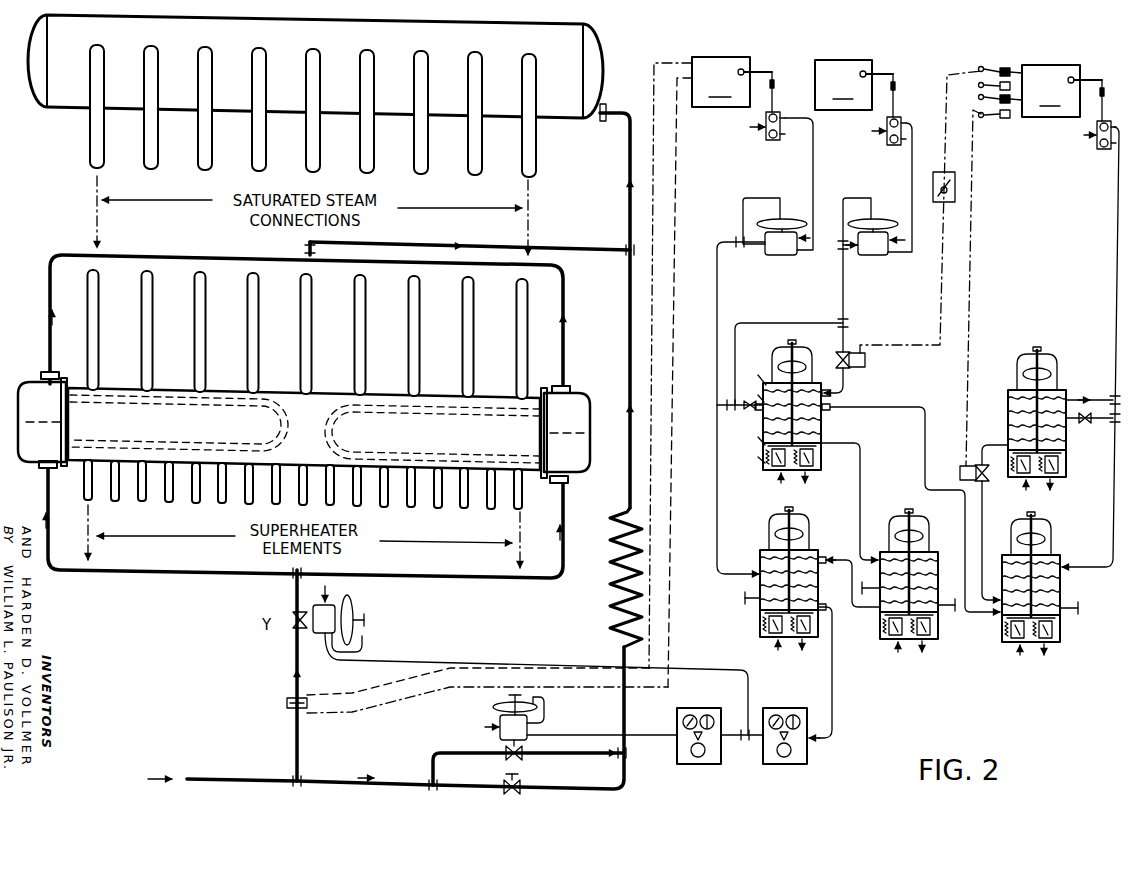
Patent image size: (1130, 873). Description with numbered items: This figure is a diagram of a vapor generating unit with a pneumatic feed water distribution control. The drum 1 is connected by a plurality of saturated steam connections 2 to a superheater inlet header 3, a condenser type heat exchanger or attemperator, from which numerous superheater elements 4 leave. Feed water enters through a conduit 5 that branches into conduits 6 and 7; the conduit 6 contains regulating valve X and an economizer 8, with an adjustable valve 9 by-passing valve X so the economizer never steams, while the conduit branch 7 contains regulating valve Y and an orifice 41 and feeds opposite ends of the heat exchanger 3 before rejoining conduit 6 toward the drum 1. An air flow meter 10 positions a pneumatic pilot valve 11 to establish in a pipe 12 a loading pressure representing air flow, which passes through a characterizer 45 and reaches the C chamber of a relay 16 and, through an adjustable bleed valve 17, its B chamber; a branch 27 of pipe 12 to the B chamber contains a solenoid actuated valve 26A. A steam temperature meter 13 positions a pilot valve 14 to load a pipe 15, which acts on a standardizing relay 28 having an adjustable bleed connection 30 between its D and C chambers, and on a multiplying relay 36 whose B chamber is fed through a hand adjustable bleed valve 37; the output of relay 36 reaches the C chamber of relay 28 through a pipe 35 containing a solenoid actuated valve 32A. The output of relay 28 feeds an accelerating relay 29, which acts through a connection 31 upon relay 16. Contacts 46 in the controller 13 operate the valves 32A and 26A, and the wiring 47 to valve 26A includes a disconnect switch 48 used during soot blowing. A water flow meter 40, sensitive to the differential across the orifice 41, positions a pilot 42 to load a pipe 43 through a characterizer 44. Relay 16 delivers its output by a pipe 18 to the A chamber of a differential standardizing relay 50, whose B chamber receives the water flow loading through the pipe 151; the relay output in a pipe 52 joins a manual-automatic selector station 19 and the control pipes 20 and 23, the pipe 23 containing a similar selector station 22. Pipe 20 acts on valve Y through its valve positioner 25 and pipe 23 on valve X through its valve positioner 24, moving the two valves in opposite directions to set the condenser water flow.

The drum 1 is at (605, 64).
The saturated steam connections 2 is at (463, 337).
The superheater inlet header 3 is at (490, 388).
The superheater elements 4 is at (462, 498).
The conduit 5 is at (228, 778).
The conduit 6 is at (622, 688).
The conduit branch 7 is at (305, 740).
The economizer 8 is at (640, 584).
The adjustable valve 9 is at (522, 783).
The air flow meter 10 is at (854, 71).
The pneumatic pilot valve 11 is at (887, 143).
The pipe 12 is at (912, 180).
The steam temperature meter 13 is at (1057, 77).
The pilot valve 14 is at (1098, 150).
The pipe 15 is at (1114, 250).
The relay 16 is at (782, 350).
The adjustable bleed valve 17 is at (746, 414).
The pipe 18 is at (860, 496).
The manual-automatic selector station 19 is at (785, 768).
The pipe 20 is at (467, 660).
The selector station 22 is at (695, 766).
The pipe 23 is at (657, 738).
The valve positioner 24 is at (498, 732).
The valve positioner 25 is at (338, 635).
The solenoid actuated valve 26A is at (850, 372).
The branch 27 is at (847, 342).
The standardizing relay 28 is at (1055, 530).
The accelerating relay 29 is at (905, 522).
The adjustable bleed connection 30 is at (1076, 608).
The control line 31 is at (925, 426).
The solenoid actuated valve 32A is at (990, 483).
The pipe 35 is at (990, 446).
The multiplying relay 36 is at (1050, 360).
The hand adjustable bleed valve 37 is at (1087, 426).
The water flow meter 40 is at (725, 67).
The orifice 41 is at (286, 704).
The pilot 42 is at (767, 138).
The pipe 43 is at (813, 178).
The characterizer 44 is at (770, 258).
The characterizer 45 is at (873, 258).
The contacts 46 is at (1013, 144).
The wiring 47 is at (935, 296).
The disconnect switch 48 is at (943, 172).
The differential standardizing relay 50 is at (776, 516).
The pipe 52 is at (835, 703).
The control line 151 is at (716, 474).